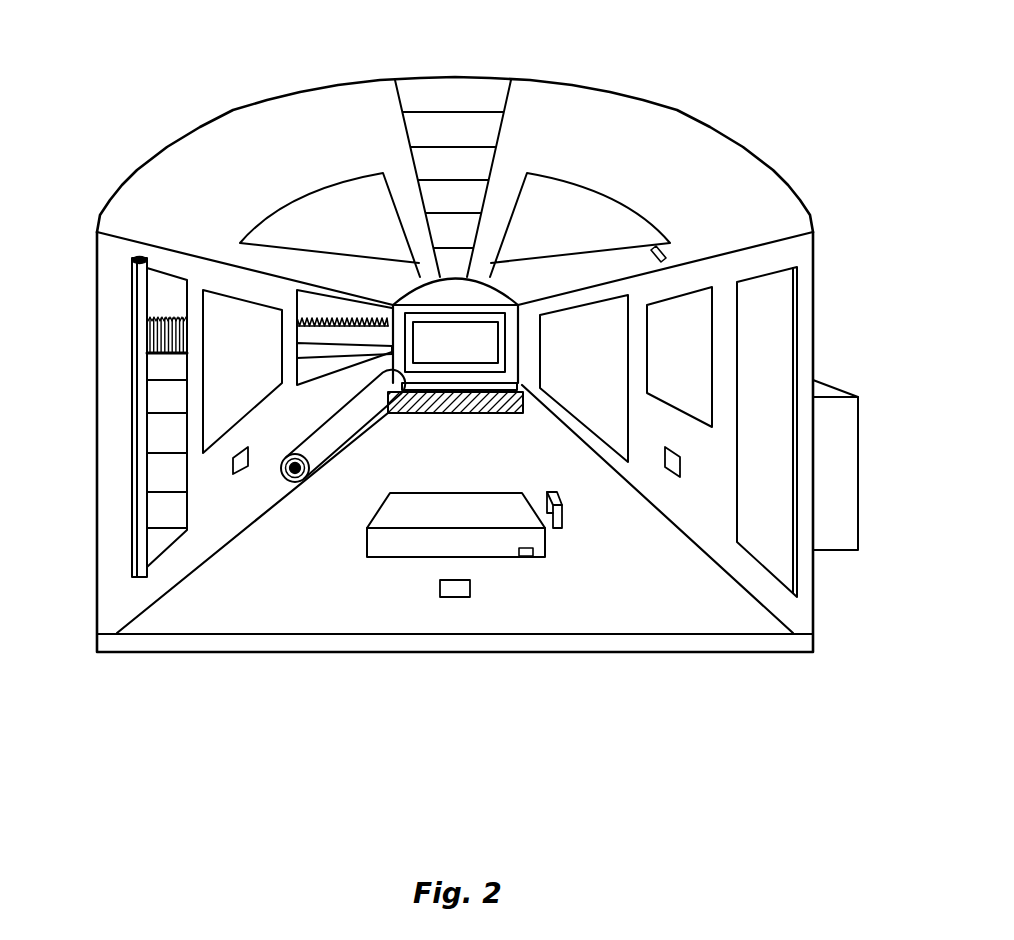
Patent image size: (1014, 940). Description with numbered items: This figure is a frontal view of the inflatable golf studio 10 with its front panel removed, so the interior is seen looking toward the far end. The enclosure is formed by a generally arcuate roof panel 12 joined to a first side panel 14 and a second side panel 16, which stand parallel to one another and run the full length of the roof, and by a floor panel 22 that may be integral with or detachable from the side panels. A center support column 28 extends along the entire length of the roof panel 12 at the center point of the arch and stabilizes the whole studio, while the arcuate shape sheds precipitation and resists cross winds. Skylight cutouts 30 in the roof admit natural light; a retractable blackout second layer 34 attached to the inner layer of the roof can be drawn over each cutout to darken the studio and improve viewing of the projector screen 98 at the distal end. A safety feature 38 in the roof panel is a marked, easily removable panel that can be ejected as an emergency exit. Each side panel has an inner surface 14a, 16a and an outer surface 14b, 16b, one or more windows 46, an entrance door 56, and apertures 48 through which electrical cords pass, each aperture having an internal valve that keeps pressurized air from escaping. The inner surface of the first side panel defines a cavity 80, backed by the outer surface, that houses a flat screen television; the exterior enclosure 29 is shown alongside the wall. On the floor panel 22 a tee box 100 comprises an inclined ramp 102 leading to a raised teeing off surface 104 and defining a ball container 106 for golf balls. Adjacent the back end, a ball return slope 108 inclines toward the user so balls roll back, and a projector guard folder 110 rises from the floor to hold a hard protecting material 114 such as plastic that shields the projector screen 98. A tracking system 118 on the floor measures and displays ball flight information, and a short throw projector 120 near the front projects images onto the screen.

The inflatable golf studio 10 is at (78, 126).
The roof panel 12 is at (623, 97).
The first side panel 14 is at (820, 301).
The inner surface of first side panel 14a is at (817, 368).
The outer surface of first side panel 14b is at (763, 588).
The second side panel 16 is at (92, 292).
The inner surface of second side panel 16a is at (130, 380).
The outer surface of second side panel 16b is at (105, 610).
The floor panel 22 is at (687, 625).
The center support column 28 is at (440, 98).
The exterior compartment 29 is at (862, 452).
The skylight cutout 30 is at (285, 222).
The second layer 34 is at (602, 315).
The safety feature 38 is at (663, 242).
The window 46 is at (325, 343).
The aperture 48 is at (243, 478).
The entrance door 56 is at (147, 568).
The cavity 80 is at (213, 303).
The projector screen 98 is at (423, 330).
The tee box 100 is at (428, 571).
The ramp 102 is at (392, 557).
The teeing off surface 104 is at (440, 500).
The ball container 106 is at (524, 557).
The ball return slope 108 is at (508, 415).
The projector guard folder 110 is at (412, 383).
The hard protecting material 114 is at (466, 312).
The tracking system 118 is at (563, 525).
The projector 120 is at (448, 598).